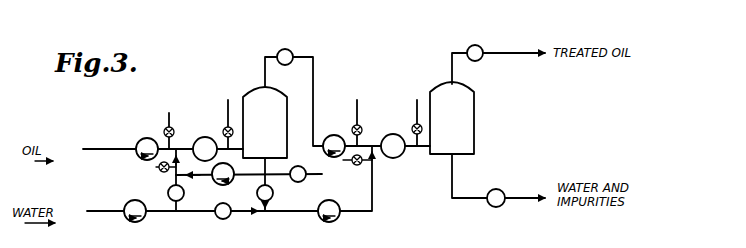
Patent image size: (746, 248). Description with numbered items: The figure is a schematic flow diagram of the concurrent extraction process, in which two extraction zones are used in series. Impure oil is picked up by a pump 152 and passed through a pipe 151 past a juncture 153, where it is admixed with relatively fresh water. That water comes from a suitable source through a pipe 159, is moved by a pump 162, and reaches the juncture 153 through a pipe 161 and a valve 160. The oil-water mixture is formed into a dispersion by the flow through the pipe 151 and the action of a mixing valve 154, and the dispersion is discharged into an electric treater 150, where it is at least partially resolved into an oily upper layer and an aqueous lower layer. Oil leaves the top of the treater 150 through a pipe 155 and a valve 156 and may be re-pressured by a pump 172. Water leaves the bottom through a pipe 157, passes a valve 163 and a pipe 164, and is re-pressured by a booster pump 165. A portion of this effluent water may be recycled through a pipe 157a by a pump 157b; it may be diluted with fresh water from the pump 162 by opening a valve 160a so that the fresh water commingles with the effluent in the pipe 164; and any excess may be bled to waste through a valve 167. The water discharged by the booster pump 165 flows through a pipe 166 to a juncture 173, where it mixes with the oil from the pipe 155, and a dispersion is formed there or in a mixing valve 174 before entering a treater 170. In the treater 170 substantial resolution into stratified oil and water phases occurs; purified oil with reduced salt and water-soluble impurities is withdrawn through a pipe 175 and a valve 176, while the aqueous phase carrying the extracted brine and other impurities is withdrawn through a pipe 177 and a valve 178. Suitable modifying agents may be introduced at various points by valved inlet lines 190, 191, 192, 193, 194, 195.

The electric treater 150 is at (265, 122).
The pipe 151 is at (97, 149).
The pump 152 is at (138, 141).
The juncture 153 is at (169, 127).
The mixing valve 154 is at (208, 134).
The pipe 155 is at (265, 55).
The valve 156 is at (290, 50).
The pipe 157 is at (274, 188).
The pipe 157a is at (252, 184).
The pump 157b is at (201, 180).
The pipe 159 is at (104, 211).
The valve 160 is at (168, 193).
The valve 160a is at (219, 219).
The pipe 161 is at (176, 176).
The pump 162 is at (142, 221).
The valve 163 is at (268, 211).
The pipe 164 is at (308, 213).
The booster pump 165 is at (339, 221).
The pipe 166 is at (374, 190).
The valve 167 is at (300, 166).
The treater 170 is at (452, 118).
The pump 172 is at (330, 136).
The juncture 173 is at (371, 146).
The mixing valve 174 is at (393, 134).
The pipe 175 is at (456, 53).
The valve 176 is at (478, 45).
The pipe 177 is at (456, 180).
The valve 178 is at (490, 207).
The valved inlet line 190 is at (166, 124).
The valved inlet line 191 is at (158, 167).
The valved inlet line 192 is at (228, 104).
The valved inlet line 193 is at (357, 108).
The valved inlet line 194 is at (352, 160).
The valved inlet line 195 is at (417, 104).